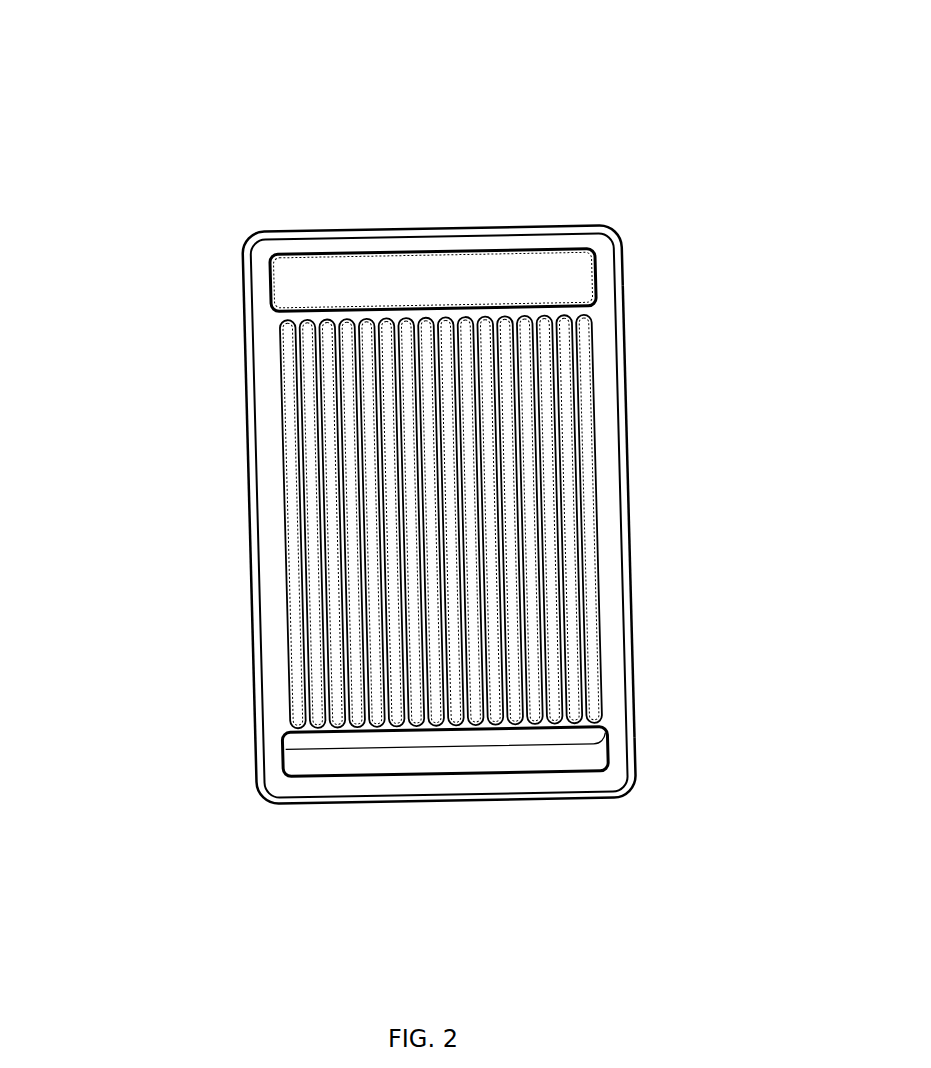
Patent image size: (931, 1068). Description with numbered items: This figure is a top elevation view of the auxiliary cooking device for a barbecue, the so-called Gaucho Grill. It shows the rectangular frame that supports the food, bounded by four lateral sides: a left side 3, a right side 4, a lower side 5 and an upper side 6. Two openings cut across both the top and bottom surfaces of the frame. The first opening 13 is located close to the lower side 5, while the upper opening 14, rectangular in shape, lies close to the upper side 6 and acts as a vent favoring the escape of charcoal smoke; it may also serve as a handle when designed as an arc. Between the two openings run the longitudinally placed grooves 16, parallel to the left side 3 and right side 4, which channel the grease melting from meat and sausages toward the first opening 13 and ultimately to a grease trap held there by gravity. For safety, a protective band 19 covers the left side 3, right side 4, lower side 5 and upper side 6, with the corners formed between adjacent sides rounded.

The left side 3 is at (200, 535).
The right side 4 is at (648, 524).
The lower side 5 is at (441, 826).
The upper side 6 is at (375, 212).
The first opening 13 is at (267, 755).
The upper opening 14 is at (283, 278).
The longitudinally placed grooves 16 is at (464, 278).
The protective band 19 is at (631, 730).